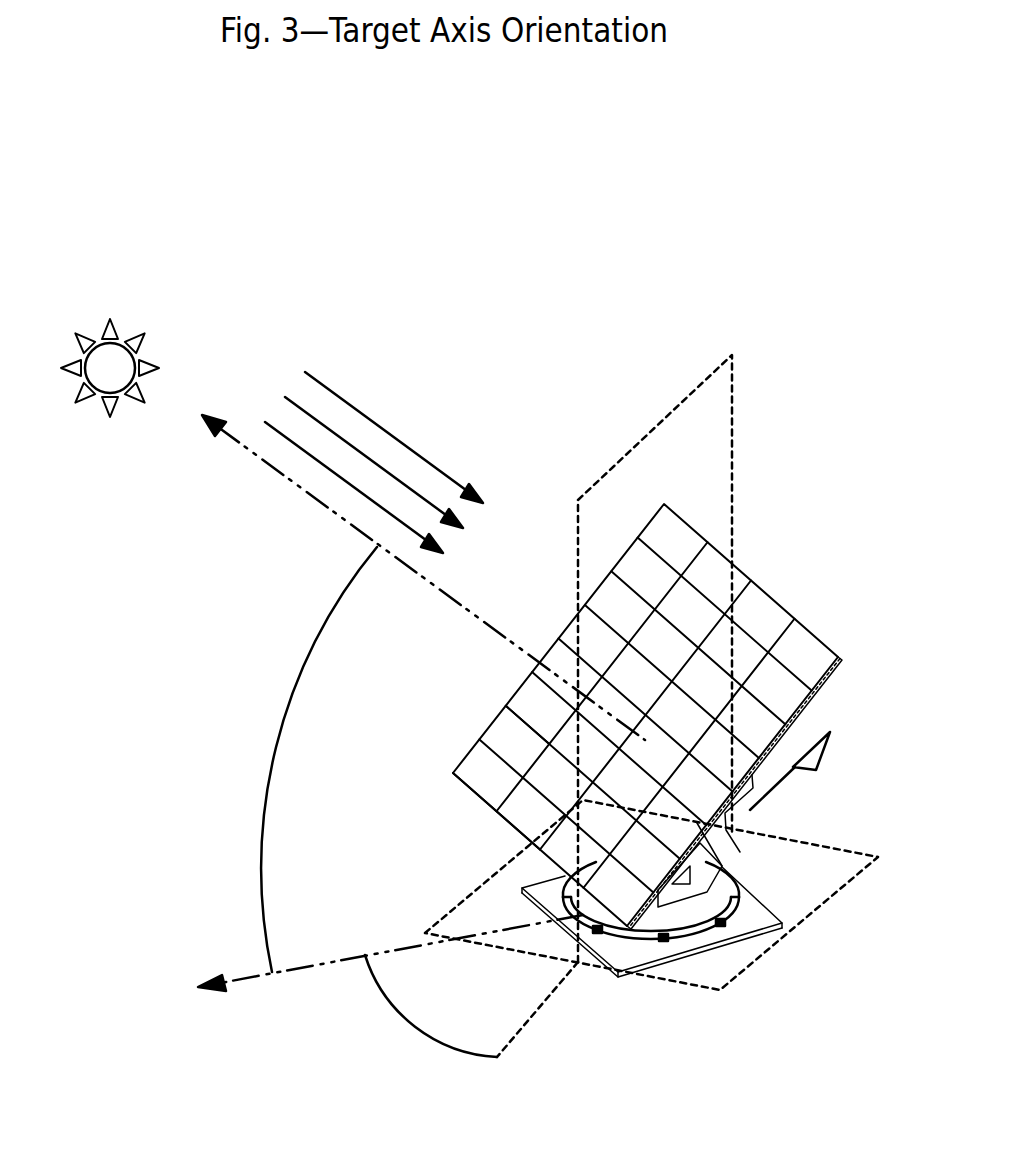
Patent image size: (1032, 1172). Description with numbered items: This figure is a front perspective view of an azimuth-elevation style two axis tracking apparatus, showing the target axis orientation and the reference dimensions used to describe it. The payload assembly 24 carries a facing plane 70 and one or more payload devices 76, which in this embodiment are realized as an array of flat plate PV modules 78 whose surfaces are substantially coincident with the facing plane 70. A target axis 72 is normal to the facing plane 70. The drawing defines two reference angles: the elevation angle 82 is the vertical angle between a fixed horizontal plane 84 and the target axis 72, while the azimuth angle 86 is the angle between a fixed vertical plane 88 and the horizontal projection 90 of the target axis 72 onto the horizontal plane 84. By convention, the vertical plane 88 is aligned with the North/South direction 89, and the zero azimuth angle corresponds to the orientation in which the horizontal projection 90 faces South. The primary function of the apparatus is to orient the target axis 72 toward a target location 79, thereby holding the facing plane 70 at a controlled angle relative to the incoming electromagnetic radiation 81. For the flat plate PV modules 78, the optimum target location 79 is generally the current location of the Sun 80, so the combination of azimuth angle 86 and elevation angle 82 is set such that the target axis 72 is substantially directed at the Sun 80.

The payload assembly 24 is at (756, 636).
The facing plane 70 is at (645, 515).
The target axis 72 is at (467, 613).
The payload devices 76 is at (498, 733).
The flat plate PV modules 78 is at (483, 773).
The target location 79 is at (151, 340).
The Sun 80 is at (123, 332).
The electromagnetic radiation 81 is at (388, 423).
The elevation angle 82 is at (260, 762).
The horizontal plane 84 is at (735, 980).
The azimuth angle 86 is at (402, 1020).
The vertical plane 88 is at (735, 392).
The North/South direction 89 is at (778, 797).
The horizontal projection 90 is at (220, 973).